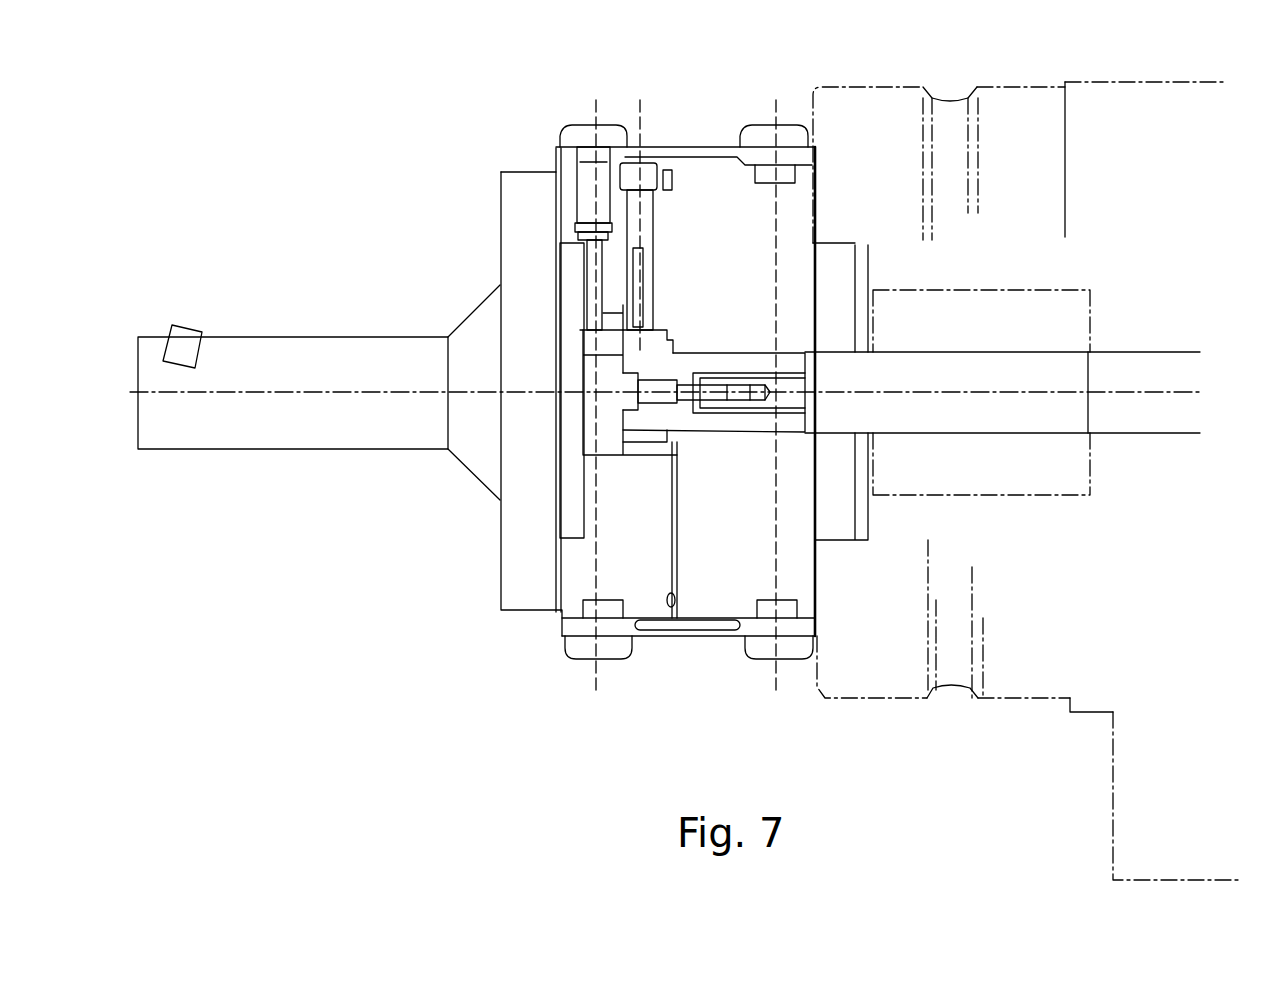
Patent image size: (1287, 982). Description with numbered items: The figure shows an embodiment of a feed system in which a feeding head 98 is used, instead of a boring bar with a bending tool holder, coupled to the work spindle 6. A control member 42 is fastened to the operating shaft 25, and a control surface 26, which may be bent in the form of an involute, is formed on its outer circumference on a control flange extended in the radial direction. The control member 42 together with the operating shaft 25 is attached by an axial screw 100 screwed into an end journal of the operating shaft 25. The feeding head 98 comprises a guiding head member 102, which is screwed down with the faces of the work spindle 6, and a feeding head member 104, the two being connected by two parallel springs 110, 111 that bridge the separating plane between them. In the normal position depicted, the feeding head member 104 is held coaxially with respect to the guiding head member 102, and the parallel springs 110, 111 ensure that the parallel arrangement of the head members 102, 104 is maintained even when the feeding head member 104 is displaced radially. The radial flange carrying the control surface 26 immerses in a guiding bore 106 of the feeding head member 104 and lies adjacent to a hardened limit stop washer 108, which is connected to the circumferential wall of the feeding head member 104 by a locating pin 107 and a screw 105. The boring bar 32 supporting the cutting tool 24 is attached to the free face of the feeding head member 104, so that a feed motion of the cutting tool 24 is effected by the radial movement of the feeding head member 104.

The work spindle 6 is at (895, 95).
The cutting tool 24 is at (180, 347).
The operating shaft 25 is at (900, 418).
The control surface 26 is at (640, 450).
The boring bar 32 is at (240, 347).
The control member 42 is at (637, 427).
The feeding head 98 is at (553, 97).
The axial screw 100 is at (688, 351).
The guiding head member 102 is at (717, 602).
The feeding head member 104 is at (638, 597).
The screw 105 is at (630, 177).
The guiding bore 106 is at (643, 452).
The locating pin 107 is at (590, 265).
The limit stop washer 108 is at (613, 313).
The parallel spring 110 is at (560, 157).
The parallel spring 111 is at (702, 630).